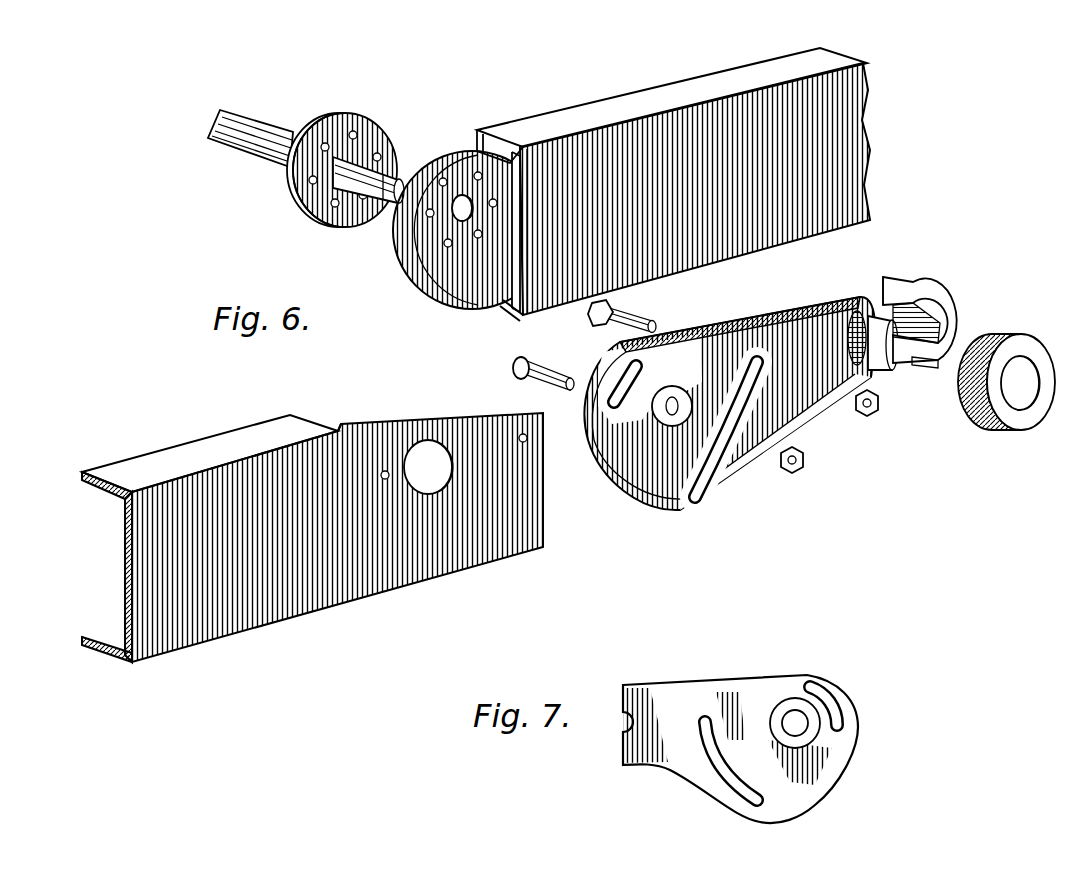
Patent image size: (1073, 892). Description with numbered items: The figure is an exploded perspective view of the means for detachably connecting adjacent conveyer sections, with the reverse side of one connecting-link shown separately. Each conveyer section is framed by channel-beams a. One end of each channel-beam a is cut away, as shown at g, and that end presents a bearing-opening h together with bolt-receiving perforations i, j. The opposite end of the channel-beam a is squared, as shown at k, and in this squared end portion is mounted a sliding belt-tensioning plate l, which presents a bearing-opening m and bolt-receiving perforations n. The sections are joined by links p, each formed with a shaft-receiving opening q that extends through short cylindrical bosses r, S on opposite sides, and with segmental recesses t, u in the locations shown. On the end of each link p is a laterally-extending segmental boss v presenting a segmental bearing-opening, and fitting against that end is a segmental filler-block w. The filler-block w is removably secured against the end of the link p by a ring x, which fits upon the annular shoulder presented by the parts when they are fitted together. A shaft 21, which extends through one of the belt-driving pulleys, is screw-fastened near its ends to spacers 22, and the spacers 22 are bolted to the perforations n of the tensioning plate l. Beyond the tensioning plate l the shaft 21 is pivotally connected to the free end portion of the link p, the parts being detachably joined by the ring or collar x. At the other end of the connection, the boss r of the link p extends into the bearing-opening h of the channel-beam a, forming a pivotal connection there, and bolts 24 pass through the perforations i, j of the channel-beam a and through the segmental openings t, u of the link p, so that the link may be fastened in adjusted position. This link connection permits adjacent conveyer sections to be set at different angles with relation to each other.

In FIG. 6, the channel-beam a is at (853, 138).
In FIG. 6, the cut-away portion g is at (354, 432).
In FIG. 6, the bearing-opening h is at (434, 460).
In FIG. 6, the bolt-receiving perforation i is at (388, 470).
In FIG. 6, the bolt-receiving perforation j is at (528, 440).
In FIG. 6, the squared end k is at (500, 147).
In FIG. 6, the belt-tensioning plate l is at (486, 280).
In FIG. 6, the bearing-opening m is at (456, 221).
In FIG. 6, the bolt-receiving perforations n is at (476, 238).
In FIG. 6, the link p is at (748, 455).
In FIG. 7, the link p is at (718, 683).
In FIG. 6, the shaft-receiving opening q is at (671, 414).
In FIG. 7, the shaft-receiving opening q is at (797, 718).
In FIG. 7, the cylindrical boss r is at (812, 735).
In FIG. 6, the cylindrical boss S is at (692, 378).
In FIG. 6, the segmental recess t is at (597, 433).
In FIG. 7, the segmental recess t is at (830, 700).
In FIG. 6, the segmental recess u is at (700, 500).
In FIG. 7, the segmental recess u is at (718, 763).
In FIG. 6, the segmental boss v is at (887, 373).
In FIG. 6, the filler-block w is at (904, 283).
In FIG. 6, the ring x is at (978, 418).
In FIG. 6, the shaft 21 is at (243, 145).
In FIG. 6, the spacer 22 is at (343, 115).
In FIG. 6, the bolt 24 is at (630, 318).